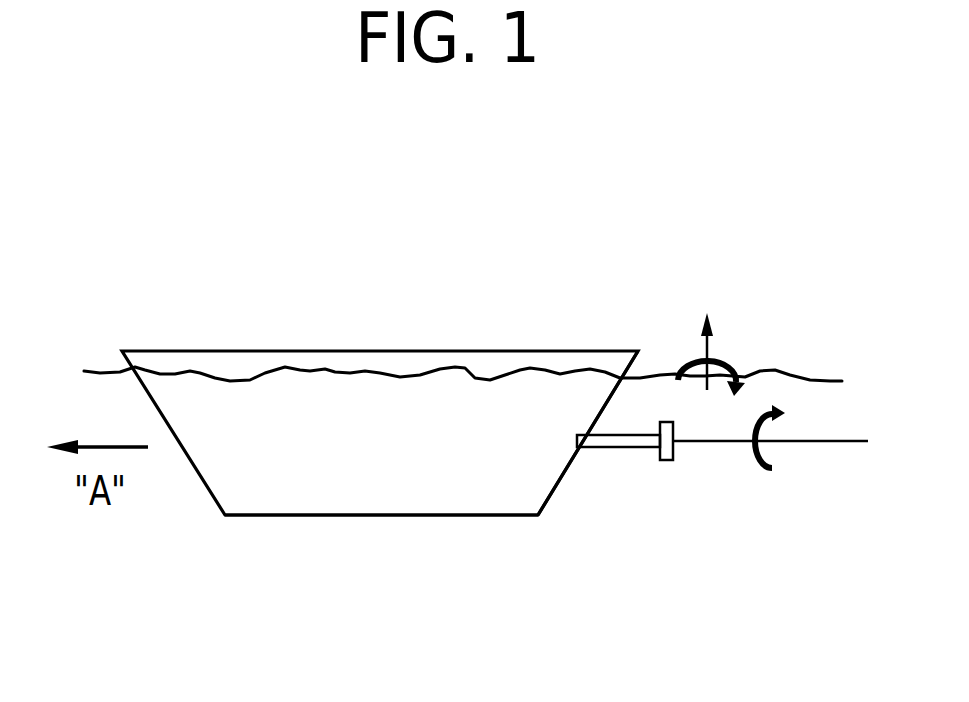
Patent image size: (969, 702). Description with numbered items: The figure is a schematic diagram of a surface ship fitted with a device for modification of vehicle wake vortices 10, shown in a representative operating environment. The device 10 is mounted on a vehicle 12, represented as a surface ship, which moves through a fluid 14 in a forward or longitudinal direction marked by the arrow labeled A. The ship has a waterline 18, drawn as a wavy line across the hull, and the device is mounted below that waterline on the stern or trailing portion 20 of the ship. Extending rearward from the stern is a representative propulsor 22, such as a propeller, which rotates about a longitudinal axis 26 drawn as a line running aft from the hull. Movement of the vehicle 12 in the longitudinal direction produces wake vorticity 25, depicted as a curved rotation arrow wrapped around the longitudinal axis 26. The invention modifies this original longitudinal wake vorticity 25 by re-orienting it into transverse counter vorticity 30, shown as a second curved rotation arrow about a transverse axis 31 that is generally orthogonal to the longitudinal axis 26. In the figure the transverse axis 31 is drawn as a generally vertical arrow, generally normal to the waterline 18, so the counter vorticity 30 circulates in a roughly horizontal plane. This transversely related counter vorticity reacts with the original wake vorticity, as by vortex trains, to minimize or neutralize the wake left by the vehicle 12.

The device for modification of vehicle wake vortices 10 is at (582, 578).
The vehicle 12 is at (465, 352).
The fluid 14 is at (231, 623).
The waterline 18 is at (103, 372).
The stern or trailing portion 20 is at (553, 487).
The propulsor 22 is at (666, 460).
The wake vorticity 25 is at (768, 467).
The longitudinal axis 26 is at (830, 445).
The transverse counter vorticity 30 is at (740, 372).
The transverse axis 31 is at (710, 350).